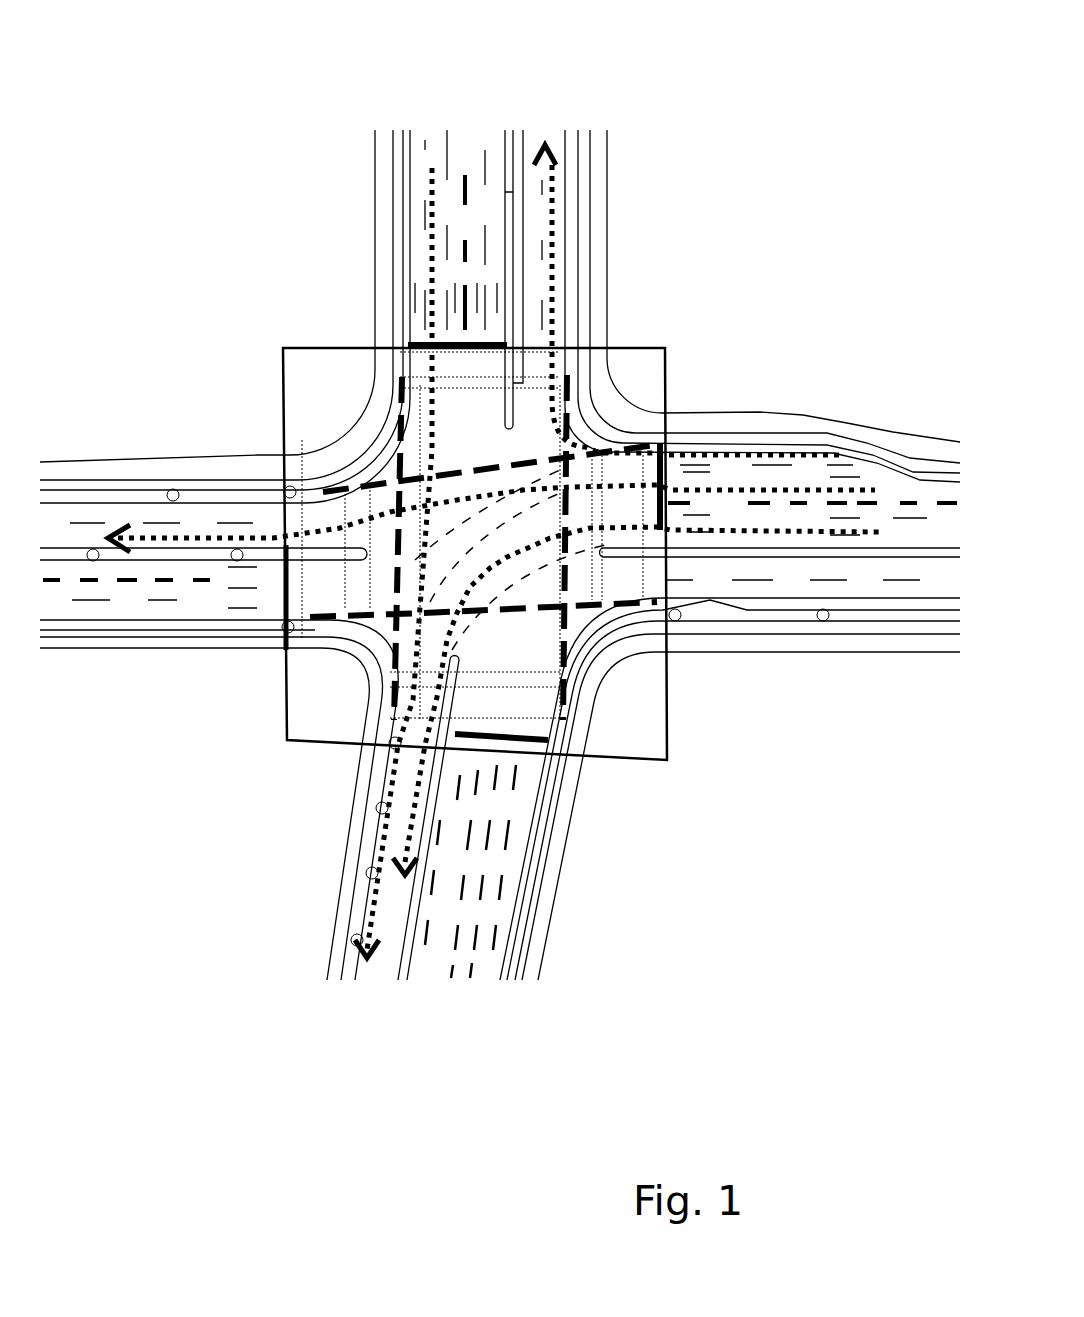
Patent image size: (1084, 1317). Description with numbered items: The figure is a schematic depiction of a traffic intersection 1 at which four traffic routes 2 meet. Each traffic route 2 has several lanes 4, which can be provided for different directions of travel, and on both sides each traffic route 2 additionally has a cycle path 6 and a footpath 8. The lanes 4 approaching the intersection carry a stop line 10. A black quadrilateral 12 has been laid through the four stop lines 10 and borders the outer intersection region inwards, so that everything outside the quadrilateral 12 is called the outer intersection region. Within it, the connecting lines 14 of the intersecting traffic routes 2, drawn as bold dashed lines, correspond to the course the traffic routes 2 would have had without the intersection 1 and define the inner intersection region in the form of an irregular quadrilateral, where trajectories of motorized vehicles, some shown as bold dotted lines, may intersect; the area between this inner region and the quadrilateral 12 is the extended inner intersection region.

The traffic intersection 1 is at (760, 177).
The traffic route 2 is at (610, 83).
The lane 4 is at (433, 143).
The cycle path 6 is at (398, 142).
The footpath 8 is at (100, 476).
The stop line 10 is at (425, 340).
The quadrilateral 12 is at (668, 385).
The connecting line 14 is at (402, 422).